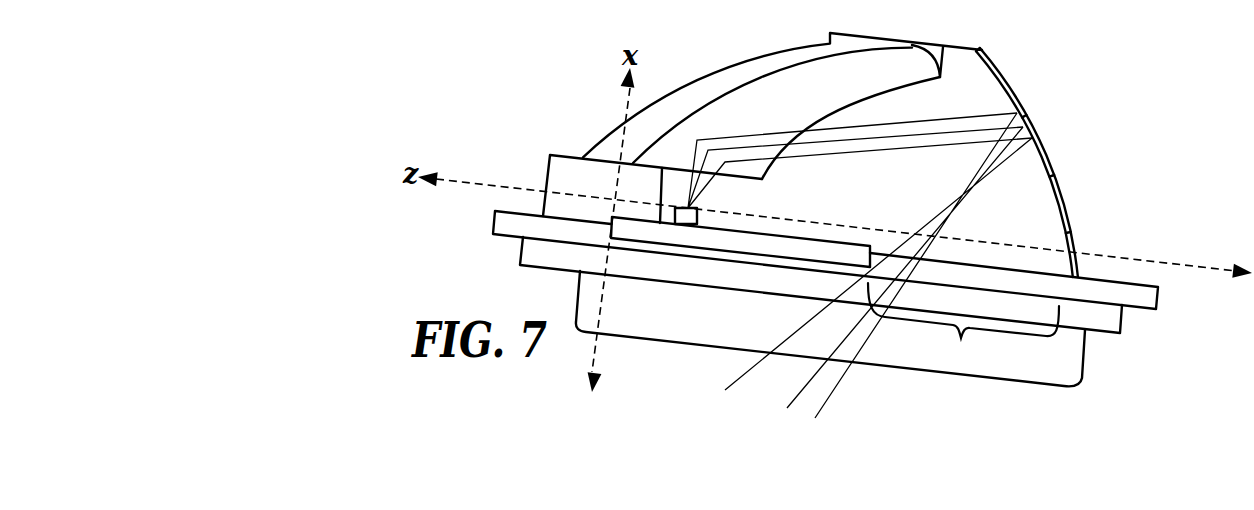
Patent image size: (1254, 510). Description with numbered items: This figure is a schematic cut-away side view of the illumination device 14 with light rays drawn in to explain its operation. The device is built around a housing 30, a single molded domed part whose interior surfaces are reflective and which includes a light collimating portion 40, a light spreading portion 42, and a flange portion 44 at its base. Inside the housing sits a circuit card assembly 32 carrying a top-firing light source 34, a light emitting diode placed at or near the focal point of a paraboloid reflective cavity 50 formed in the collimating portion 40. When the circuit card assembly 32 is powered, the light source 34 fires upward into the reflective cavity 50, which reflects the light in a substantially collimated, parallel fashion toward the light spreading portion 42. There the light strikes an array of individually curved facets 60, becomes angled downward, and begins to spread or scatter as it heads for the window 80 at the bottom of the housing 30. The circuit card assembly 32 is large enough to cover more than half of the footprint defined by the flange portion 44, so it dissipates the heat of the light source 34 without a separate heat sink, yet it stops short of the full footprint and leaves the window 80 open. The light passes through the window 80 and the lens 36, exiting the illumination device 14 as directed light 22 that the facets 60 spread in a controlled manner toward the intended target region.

The illumination device 14 is at (1070, 106).
The directed light 22 is at (722, 378).
The housing 30 is at (794, 44).
The circuit card assembly 32 is at (596, 227).
The light source 34 is at (697, 221).
The lens 36 is at (1092, 358).
The light collimating portion 40 is at (596, 124).
The light spreading portion 42 is at (1059, 162).
The flange portion 44 is at (1150, 291).
The reflective cavity 50 is at (710, 113).
The curved facets 60 is at (1045, 167).
The window 80 is at (963, 328).